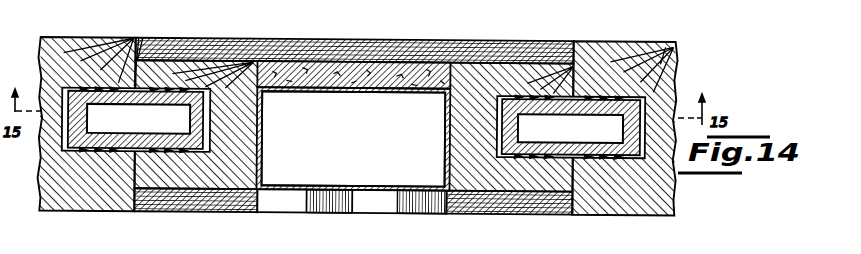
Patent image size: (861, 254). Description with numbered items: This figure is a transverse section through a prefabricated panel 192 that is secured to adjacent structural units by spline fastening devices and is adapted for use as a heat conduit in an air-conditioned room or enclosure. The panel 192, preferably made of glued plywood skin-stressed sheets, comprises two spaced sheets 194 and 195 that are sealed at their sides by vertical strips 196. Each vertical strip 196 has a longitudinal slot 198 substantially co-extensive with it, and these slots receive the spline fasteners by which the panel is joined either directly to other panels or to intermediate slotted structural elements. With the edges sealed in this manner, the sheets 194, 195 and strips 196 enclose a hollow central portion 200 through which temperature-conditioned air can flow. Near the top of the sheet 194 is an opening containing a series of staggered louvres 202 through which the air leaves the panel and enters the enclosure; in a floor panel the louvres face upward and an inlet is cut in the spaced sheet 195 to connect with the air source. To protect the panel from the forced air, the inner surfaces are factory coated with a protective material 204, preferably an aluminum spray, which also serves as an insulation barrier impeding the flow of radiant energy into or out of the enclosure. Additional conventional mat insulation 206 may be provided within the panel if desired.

The panel 192 is at (552, 50).
The spaced sheet 194 is at (192, 197).
The spaced sheet 195 is at (227, 42).
The vertical strip 196 is at (238, 178).
The longitudinal slot 198 is at (207, 117).
The hollow central portion 200 is at (358, 145).
The staggered louvres 202 is at (381, 205).
The protective material 204 is at (260, 118).
The mat insulation 206 is at (406, 84).